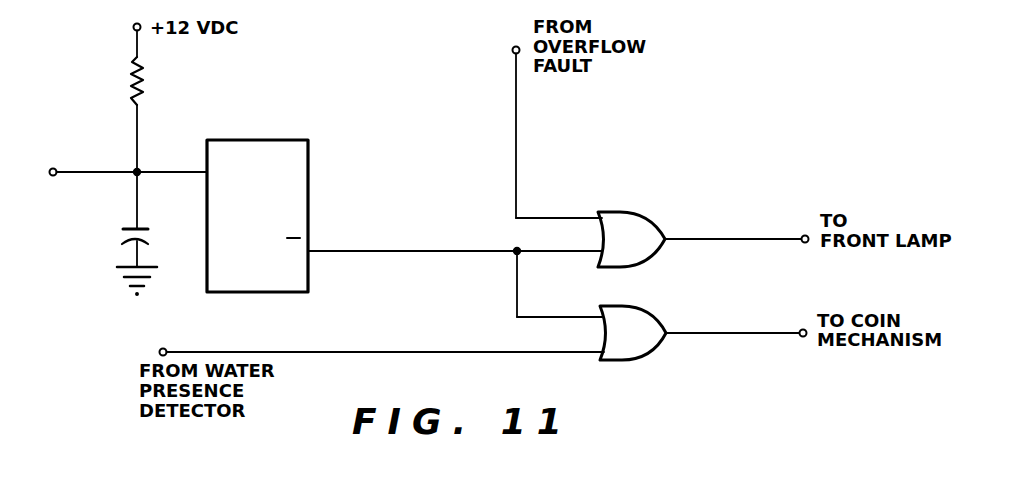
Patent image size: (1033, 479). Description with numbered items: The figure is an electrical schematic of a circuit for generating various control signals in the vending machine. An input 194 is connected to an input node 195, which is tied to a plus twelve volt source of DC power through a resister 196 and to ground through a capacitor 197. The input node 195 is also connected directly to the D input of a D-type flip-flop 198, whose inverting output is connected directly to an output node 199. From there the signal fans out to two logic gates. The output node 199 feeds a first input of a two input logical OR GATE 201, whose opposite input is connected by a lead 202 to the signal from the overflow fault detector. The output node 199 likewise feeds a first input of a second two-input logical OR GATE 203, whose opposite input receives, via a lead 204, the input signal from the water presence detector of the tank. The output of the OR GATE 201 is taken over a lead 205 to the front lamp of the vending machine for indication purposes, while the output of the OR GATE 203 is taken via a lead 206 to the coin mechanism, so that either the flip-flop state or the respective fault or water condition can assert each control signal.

The input 194 is at (57, 167).
The input node 195 is at (140, 168).
The resister 196 is at (142, 82).
The capacitor 197 is at (122, 230).
The D-type flip-flop 198 is at (296, 140).
The output node 199 is at (514, 256).
The two input logical OR GATE 201 is at (632, 212).
The lead 202 is at (516, 143).
The second 2-input logical OR GATE 203 is at (636, 361).
The lead 204 is at (226, 352).
The lead 205 is at (716, 239).
The lead 206 is at (708, 333).